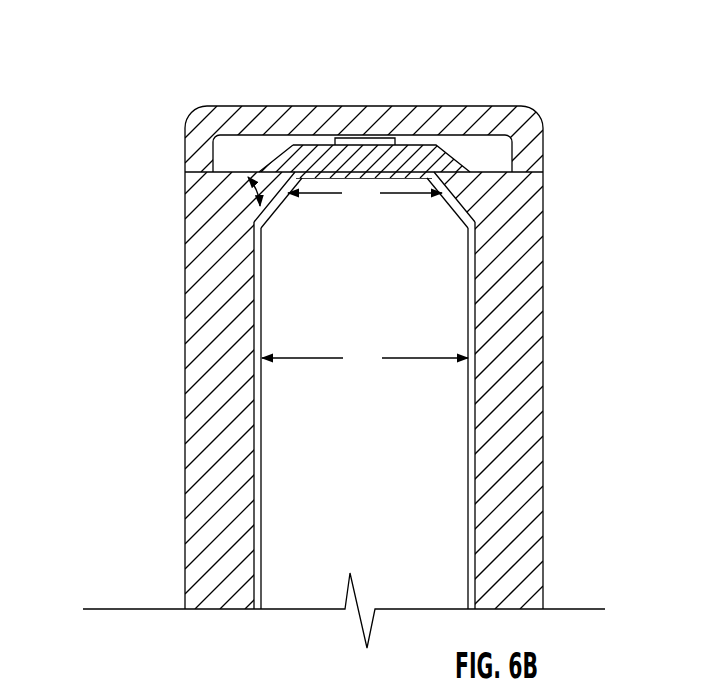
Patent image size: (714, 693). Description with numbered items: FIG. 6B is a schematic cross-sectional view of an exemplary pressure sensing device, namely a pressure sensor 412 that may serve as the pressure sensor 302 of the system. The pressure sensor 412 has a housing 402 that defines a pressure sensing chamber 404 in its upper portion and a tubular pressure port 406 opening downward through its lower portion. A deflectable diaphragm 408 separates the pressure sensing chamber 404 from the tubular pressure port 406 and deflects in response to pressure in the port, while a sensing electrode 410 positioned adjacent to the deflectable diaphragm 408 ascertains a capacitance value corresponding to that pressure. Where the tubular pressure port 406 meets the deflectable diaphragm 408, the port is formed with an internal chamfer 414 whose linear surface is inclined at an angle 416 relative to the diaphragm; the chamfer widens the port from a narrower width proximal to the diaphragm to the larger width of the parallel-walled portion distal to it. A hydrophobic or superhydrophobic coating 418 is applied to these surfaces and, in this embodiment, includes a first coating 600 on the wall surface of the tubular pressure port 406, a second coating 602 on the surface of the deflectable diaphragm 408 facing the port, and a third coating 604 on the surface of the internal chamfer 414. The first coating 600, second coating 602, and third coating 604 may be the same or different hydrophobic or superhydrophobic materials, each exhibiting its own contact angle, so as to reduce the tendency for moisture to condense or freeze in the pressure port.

The pressure sensor 302 is at (528, 92).
The pressure sensor 412 is at (381, 95).
The housing 402 is at (544, 289).
The pressure sensing chamber 404 is at (493, 154).
The tubular pressure port 406 is at (464, 452).
The deflectable diaphragm 408 is at (415, 145).
The sensing electrode 410 is at (372, 138).
The internal chamfer 414 is at (263, 218).
The angle 416 is at (229, 197).
The hydrophobic or superhydrophobic coating 418 is at (380, 324).
The first coating 600 is at (263, 398).
The second coating 602 is at (418, 181).
The third coating 604 is at (274, 204).